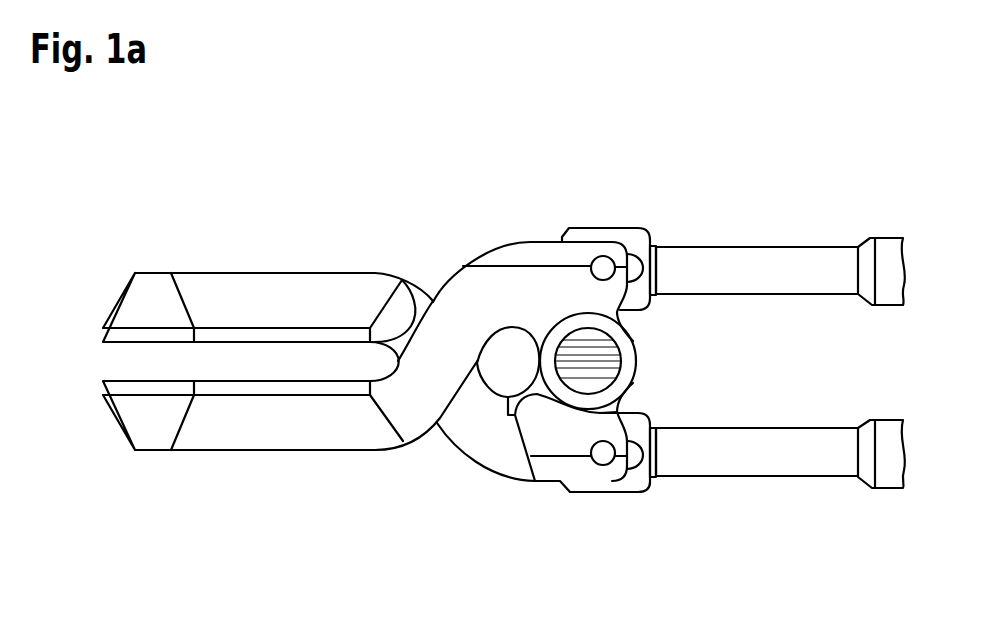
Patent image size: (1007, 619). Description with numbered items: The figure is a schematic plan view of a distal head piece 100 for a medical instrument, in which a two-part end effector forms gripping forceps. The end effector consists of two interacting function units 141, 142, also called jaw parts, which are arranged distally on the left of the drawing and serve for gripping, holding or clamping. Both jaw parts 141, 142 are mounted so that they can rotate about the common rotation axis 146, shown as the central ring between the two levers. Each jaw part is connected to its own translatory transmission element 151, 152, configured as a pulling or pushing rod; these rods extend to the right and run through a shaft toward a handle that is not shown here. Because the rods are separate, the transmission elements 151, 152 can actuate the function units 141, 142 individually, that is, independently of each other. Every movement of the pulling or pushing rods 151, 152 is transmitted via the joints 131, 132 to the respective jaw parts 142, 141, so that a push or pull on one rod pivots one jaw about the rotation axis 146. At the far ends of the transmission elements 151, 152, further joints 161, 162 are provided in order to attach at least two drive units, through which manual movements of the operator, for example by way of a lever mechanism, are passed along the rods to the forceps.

The distal head piece 100 is at (172, 172).
The joint 131 is at (603, 270).
The joint 132 is at (603, 453).
The function unit 141 is at (285, 433).
The function unit 142 is at (285, 290).
The rotation axis 146 is at (587, 360).
The transmission element 151 is at (767, 260).
The transmission element 152 is at (767, 463).
The joint 161 is at (892, 253).
The joint 162 is at (892, 470).